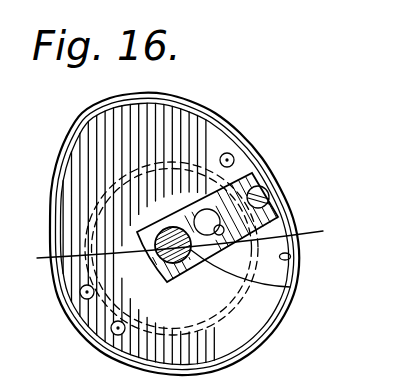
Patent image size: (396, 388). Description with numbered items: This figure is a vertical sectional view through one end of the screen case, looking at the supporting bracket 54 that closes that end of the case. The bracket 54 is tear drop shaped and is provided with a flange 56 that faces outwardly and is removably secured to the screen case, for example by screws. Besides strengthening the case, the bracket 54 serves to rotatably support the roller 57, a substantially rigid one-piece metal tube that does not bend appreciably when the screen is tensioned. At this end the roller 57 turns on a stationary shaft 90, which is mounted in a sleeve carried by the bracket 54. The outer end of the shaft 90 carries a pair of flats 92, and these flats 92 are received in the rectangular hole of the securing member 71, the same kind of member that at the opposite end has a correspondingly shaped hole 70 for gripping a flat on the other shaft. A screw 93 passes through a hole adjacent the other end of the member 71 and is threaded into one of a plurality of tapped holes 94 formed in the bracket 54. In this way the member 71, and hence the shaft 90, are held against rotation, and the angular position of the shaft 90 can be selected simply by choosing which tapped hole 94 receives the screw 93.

The supporting bracket 54 is at (170, 113).
The flange 56 is at (291, 257).
The roller 57 is at (63, 199).
The hole 70 is at (290, 236).
The securing member 71 is at (288, 287).
The shaft 90 is at (62, 256).
The flats 92 is at (152, 231).
The screw 93 is at (266, 192).
The tapped holes 94 is at (230, 153).